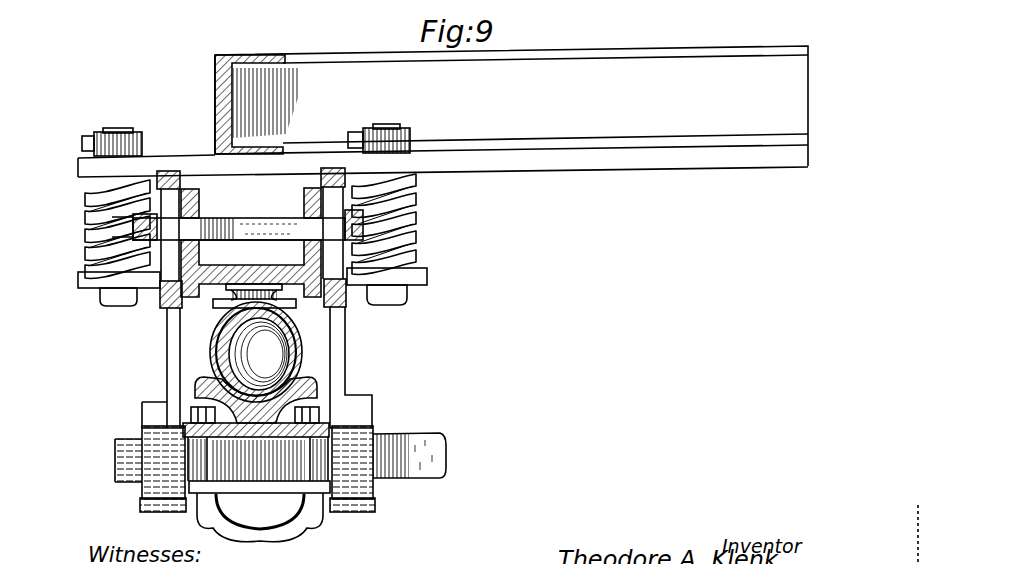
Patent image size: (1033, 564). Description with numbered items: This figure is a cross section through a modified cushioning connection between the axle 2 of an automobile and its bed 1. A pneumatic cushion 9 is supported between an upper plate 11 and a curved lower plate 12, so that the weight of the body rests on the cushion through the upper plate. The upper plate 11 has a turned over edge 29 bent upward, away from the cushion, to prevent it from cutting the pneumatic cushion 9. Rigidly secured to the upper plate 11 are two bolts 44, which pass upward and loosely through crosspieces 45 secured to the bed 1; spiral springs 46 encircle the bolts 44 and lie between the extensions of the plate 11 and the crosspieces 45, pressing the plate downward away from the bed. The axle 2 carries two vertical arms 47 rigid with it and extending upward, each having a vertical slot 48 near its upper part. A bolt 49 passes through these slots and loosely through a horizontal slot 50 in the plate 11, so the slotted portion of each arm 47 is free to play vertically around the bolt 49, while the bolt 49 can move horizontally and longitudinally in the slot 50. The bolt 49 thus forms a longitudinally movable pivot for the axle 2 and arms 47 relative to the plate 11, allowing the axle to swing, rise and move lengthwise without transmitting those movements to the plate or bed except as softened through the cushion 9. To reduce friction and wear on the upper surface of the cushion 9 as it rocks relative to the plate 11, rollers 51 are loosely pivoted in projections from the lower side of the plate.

The bed 1 is at (218, 92).
The axle 2 is at (405, 444).
The pneumatic cushion 9 is at (291, 326).
The upper plate 11 is at (190, 187).
The lower plate 12 is at (267, 424).
The turned over edge 29 is at (203, 378).
The bolts 44 is at (117, 131).
The crosspieces 45 is at (690, 162).
The spiral springs 46 is at (95, 236).
The vertical arms 47 is at (172, 347).
The vertical slot 48 is at (321, 174).
The bolt 49 is at (250, 225).
The horizontal slot 50 is at (306, 256).
The rollers 51 is at (250, 290).